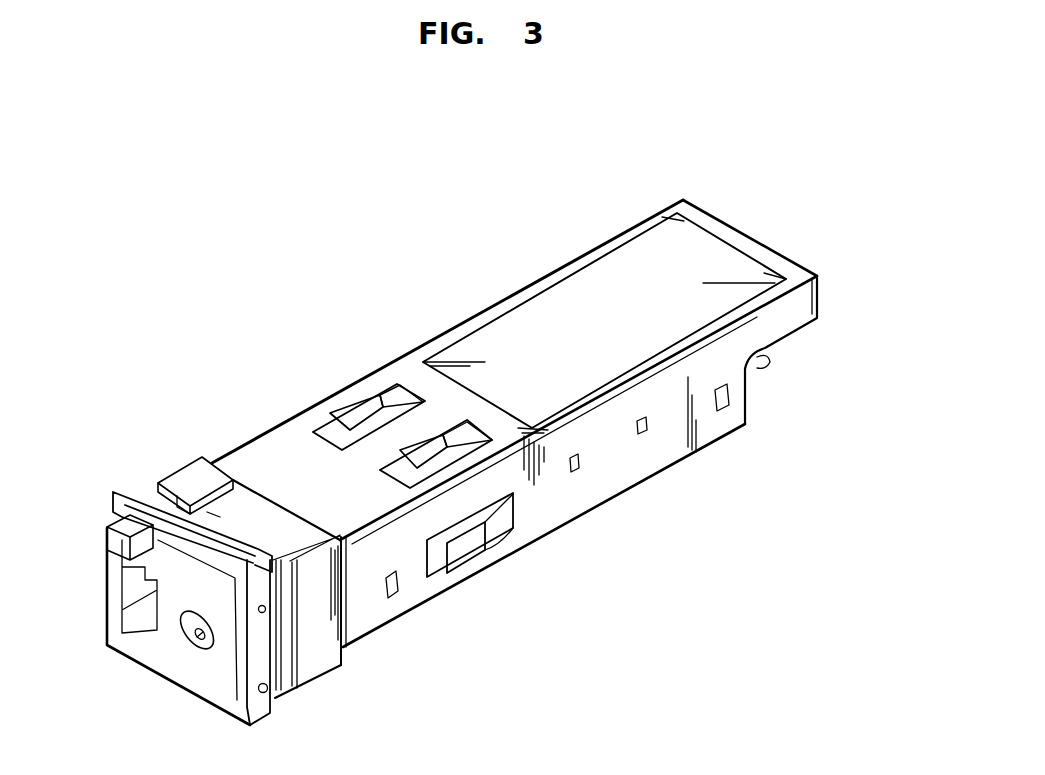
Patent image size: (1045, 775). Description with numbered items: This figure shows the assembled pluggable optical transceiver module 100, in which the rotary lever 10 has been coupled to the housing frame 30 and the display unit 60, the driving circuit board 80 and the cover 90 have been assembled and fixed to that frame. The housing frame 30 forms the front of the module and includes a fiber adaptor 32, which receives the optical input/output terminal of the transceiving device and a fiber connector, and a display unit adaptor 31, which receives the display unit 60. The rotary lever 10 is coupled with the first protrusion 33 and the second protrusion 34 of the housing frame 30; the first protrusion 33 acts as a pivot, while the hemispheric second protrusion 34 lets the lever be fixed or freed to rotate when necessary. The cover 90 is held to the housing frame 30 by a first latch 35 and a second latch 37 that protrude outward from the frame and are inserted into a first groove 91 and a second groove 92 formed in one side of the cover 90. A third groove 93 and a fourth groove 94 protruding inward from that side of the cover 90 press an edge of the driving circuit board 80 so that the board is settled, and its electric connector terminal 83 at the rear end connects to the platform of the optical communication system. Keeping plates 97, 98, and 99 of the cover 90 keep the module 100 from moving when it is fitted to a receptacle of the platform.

The rotary lever 10 is at (140, 480).
The housing frame 30 is at (143, 671).
The display unit adaptor 31 is at (182, 627).
The fiber adaptor 32 is at (120, 578).
The first protrusion 33 is at (268, 693).
The second protrusion 34 is at (266, 613).
The first latch 35 is at (396, 594).
The second latch 37 is at (728, 405).
The display unit 60 is at (206, 658).
The driving circuit board 80 is at (764, 376).
The electric connector terminal 83 is at (758, 366).
The cover 90 is at (268, 435).
The first groove 91 is at (390, 576).
The second groove 92 is at (717, 393).
The third groove 93 is at (579, 470).
The fourth groove 94 is at (649, 430).
The keeping plate 97 is at (462, 555).
The keeping plate 98 is at (342, 406).
The keeping plate 99 is at (430, 431).
The pluggable optical transceiver module 100 is at (410, 344).